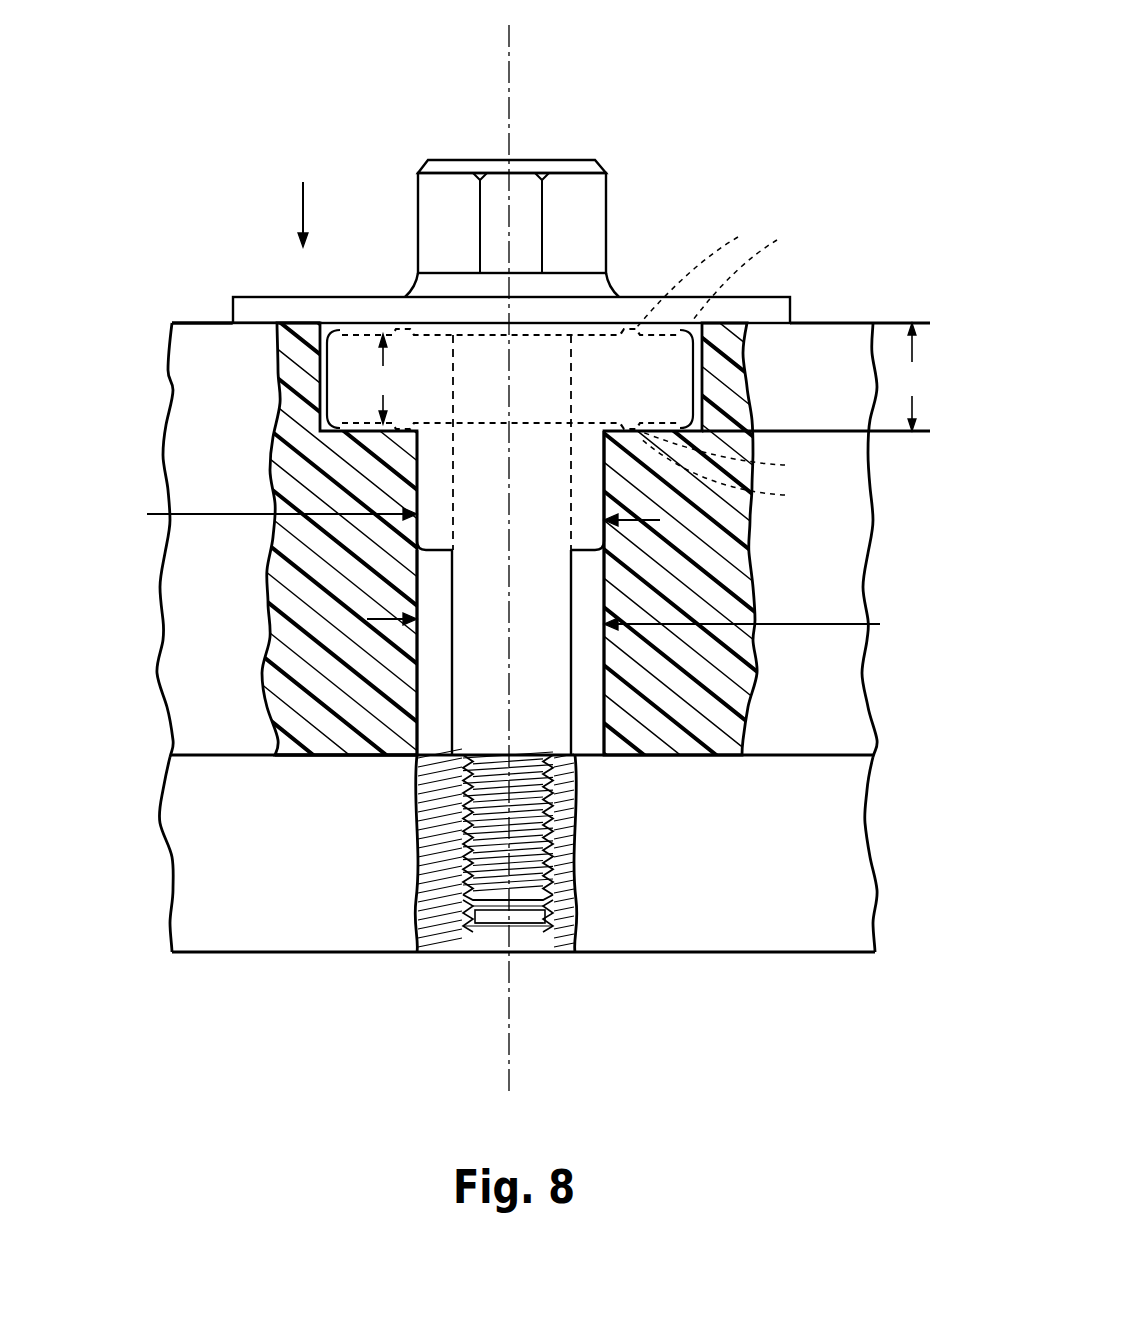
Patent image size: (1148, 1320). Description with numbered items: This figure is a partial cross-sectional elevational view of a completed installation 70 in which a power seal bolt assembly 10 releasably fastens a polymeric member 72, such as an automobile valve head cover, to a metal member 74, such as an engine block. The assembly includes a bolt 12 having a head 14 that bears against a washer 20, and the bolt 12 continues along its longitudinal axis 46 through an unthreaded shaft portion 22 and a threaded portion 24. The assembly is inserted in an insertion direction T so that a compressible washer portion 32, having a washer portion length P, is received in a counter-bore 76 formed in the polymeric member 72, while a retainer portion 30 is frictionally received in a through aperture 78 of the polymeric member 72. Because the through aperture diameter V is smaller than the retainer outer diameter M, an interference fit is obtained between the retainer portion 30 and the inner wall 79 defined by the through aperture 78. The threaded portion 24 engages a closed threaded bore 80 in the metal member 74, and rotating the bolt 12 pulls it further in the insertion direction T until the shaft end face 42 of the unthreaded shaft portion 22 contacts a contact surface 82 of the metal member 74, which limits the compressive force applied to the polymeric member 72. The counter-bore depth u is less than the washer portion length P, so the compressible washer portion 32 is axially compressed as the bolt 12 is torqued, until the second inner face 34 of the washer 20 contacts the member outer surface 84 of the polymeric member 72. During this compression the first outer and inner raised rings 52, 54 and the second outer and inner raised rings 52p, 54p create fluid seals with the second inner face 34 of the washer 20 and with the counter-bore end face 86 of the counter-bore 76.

The power seal bolt assembly 10 is at (666, 260).
The bolt 12 is at (611, 228).
The head 14 is at (430, 218).
The washer 20 is at (753, 305).
The unthreaded shaft portion 22 is at (523, 705).
The threaded portion 24 is at (487, 894).
The retainer portion 30 is at (523, 505).
The compressible washer portion 32 is at (628, 395).
The second inner face 34 is at (255, 330).
The shaft end face 42 is at (565, 762).
The longitudinal axis 46 is at (512, 1018).
The first outer raised ring 52 is at (729, 456).
The first inner raised ring 54 is at (728, 474).
The second outer raised ring 52p is at (754, 266).
The second inner raised ring 54p is at (704, 264).
The completed installation 70 is at (766, 166).
The polymeric member 72 is at (793, 707).
The metal member 74 is at (746, 870).
The counter-bore 76 is at (700, 364).
The through aperture 78 is at (596, 608).
The inner wall 79 is at (424, 681).
The threaded bore 80 is at (463, 908).
The contact surface 82 is at (429, 748).
The member outer surface 84 is at (210, 320).
The counter-bore end face 86 is at (321, 426).
The retainer outer diameter M is at (387, 515).
The through aperture diameter V is at (635, 624).
The insertion direction T is at (295, 214).
The washer portion length P is at (383, 379).
The counter-bore depth u is at (913, 377).